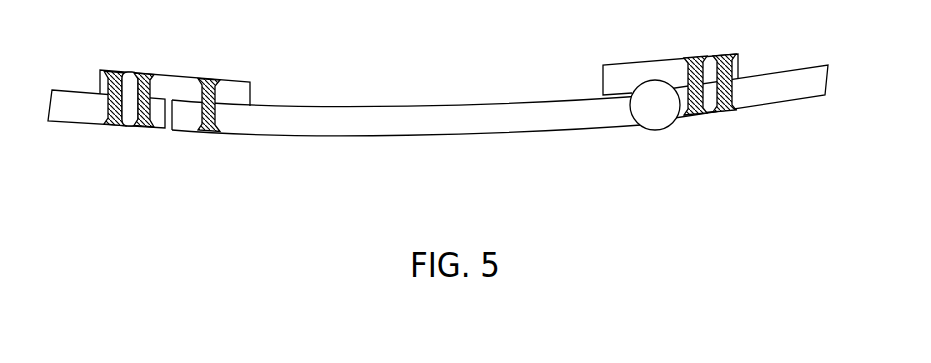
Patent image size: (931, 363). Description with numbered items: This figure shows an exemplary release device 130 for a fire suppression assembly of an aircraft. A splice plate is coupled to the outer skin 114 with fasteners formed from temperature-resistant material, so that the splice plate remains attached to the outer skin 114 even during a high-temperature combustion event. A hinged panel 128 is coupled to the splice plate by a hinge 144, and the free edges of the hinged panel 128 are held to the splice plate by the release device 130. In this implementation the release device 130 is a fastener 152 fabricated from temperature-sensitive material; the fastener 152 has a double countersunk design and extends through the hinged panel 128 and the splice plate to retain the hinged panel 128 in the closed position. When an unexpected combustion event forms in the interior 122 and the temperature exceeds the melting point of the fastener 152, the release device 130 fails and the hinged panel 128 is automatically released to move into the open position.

The outer skin 114 is at (90, 128).
The interior 122 is at (446, 101).
The hinged panel 128 is at (453, 136).
The release device 130 is at (213, 106).
The hinge 144 is at (650, 131).
The fastener 152 is at (207, 132).